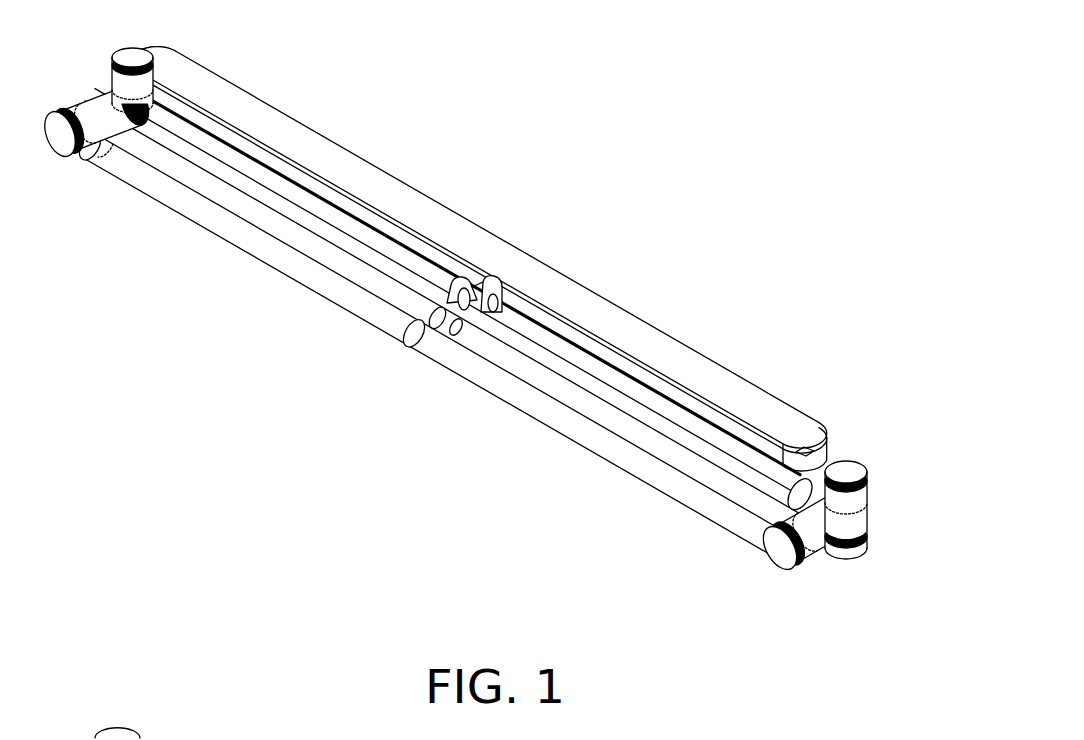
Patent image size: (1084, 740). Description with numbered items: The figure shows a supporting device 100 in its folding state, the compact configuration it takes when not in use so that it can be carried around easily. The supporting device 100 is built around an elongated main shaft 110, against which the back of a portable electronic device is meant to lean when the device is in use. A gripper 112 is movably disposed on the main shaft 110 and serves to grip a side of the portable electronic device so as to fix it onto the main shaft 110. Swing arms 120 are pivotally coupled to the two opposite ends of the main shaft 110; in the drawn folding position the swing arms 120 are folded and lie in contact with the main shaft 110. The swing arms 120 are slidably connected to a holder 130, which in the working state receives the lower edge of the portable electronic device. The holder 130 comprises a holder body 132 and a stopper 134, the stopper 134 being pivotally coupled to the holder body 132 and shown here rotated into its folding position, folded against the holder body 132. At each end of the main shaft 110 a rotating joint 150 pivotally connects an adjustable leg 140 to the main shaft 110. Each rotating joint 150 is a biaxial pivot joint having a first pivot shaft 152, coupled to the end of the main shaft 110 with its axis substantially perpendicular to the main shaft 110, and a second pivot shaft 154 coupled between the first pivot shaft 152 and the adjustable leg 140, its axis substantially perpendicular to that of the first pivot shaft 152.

The supporting device 100 is at (650, 142).
The main shaft 110 is at (475, 315).
The gripper 112 is at (478, 290).
The swing arm 120 is at (830, 458).
The holder 130 is at (479, 226).
The holder body 132 is at (178, 64).
The stopper 134 is at (293, 133).
The adjustable leg 140 is at (588, 440).
The rotating joint 150 is at (859, 570).
The first pivot shaft 152 is at (868, 517).
The second pivot shaft 154 is at (806, 560).